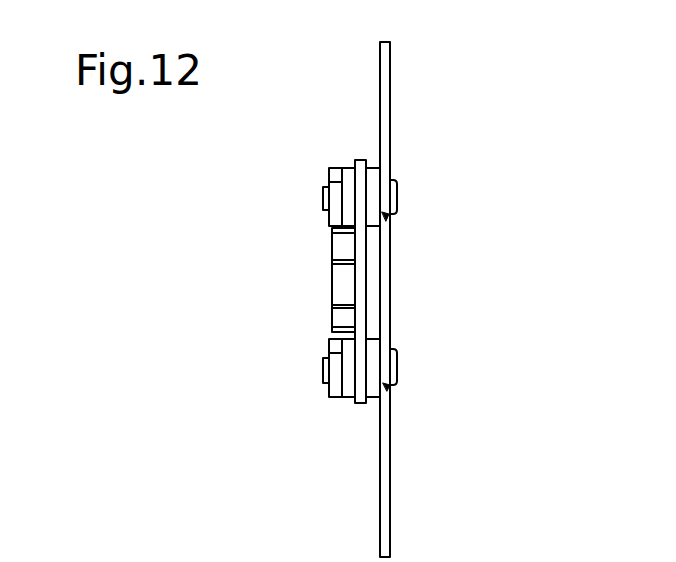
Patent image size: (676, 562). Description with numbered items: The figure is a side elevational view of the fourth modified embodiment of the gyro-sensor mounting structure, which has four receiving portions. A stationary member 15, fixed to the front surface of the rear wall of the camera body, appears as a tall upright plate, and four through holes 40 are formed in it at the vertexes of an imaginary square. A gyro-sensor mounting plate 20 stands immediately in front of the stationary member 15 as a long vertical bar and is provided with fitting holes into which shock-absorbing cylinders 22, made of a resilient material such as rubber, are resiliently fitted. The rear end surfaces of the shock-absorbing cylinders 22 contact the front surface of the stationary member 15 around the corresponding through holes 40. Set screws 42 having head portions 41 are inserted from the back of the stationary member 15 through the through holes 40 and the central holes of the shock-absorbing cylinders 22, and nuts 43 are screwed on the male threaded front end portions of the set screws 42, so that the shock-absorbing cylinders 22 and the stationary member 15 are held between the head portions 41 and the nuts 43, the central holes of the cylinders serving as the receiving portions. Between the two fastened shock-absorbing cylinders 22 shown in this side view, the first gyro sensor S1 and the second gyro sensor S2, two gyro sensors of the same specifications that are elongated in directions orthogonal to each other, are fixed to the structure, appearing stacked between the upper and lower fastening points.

The stationary member 15 is at (383, 92).
The gyro-sensor mounting plate 20 is at (360, 161).
The shock-absorbing cylinder 22 is at (350, 173).
The through hole 40 is at (393, 229).
The head portion 41 is at (397, 200).
The set screw 42 is at (323, 193).
The nut 43 is at (332, 174).
The first gyro sensor S1 is at (340, 287).
The second gyro sensor S2 is at (342, 247).